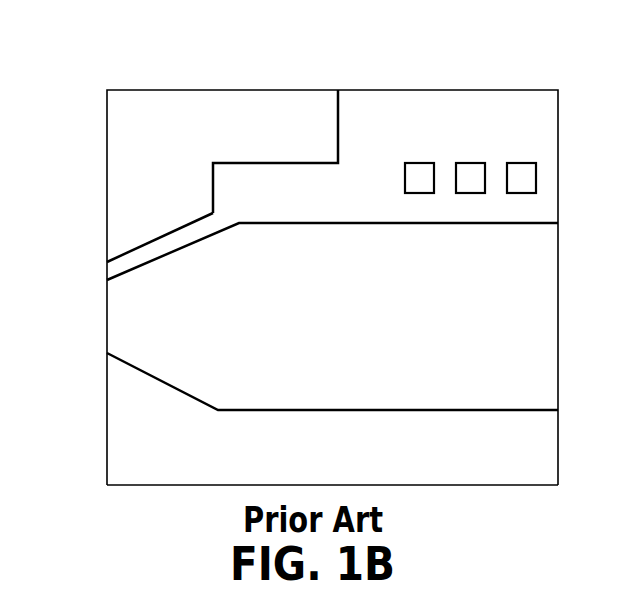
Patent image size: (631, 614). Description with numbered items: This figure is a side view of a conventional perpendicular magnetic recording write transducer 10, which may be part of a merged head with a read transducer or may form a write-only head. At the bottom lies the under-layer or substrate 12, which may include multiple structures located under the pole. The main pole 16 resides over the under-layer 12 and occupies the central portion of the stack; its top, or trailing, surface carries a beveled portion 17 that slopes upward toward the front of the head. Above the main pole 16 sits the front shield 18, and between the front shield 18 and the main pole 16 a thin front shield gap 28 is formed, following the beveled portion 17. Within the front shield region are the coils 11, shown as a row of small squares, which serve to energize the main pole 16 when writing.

The perpendicular magnetic recording transducer 10 is at (70, 79).
The coils 11 is at (523, 180).
The under-layer/substrate 12 is at (140, 459).
The main pole 16 is at (368, 328).
The beveled portion 17 is at (177, 250).
The front shield 18 is at (162, 110).
The front shield gap (FSG) 28 is at (118, 266).